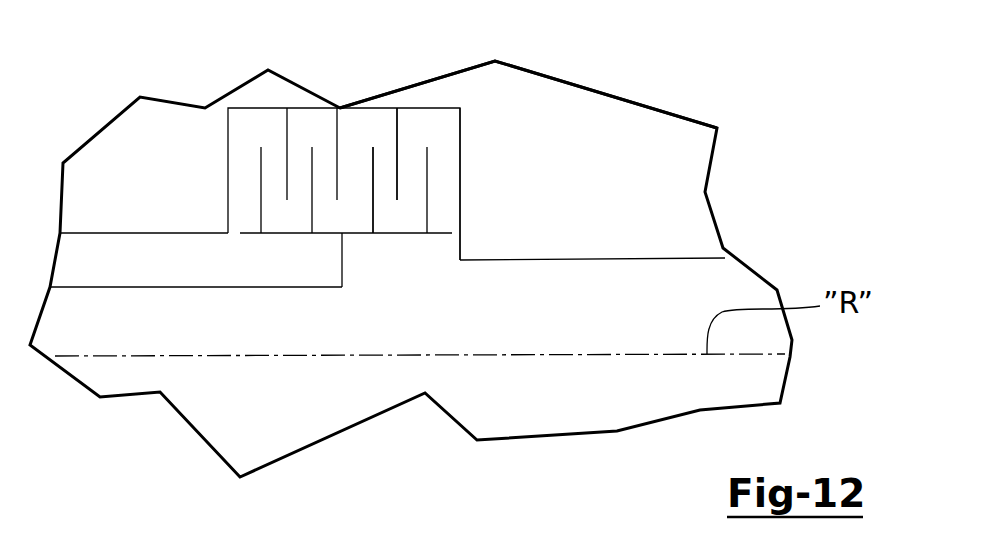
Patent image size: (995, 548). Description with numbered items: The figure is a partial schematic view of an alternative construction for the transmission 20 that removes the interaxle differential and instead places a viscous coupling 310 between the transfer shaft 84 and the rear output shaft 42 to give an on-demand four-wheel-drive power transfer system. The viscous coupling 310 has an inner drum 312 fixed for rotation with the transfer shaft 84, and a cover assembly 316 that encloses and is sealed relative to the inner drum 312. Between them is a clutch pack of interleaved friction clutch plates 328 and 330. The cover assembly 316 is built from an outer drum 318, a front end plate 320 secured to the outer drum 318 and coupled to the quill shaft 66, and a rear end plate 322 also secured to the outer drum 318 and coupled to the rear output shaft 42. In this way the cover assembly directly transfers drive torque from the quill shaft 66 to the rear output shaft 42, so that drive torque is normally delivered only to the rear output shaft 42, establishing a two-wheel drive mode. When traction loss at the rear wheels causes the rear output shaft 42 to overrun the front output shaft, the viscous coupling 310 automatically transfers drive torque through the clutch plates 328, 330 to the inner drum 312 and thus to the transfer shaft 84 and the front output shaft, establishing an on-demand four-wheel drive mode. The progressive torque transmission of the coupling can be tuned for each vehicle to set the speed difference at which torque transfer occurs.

The transmission 20 is at (752, 109).
The viscous coupling 310 is at (527, 93).
The cover assembly 316 is at (256, 106).
The outer drum 318 is at (310, 108).
The front end plate 320 is at (228, 158).
The rear end plate 322 is at (462, 177).
The friction clutch plates 328 is at (377, 208).
The friction clutch plates 330 is at (287, 130).
The inner drum 312 is at (320, 233).
The rear output shaft 42 is at (510, 260).
The quill shaft 66 is at (108, 233).
The transfer shaft 84 is at (202, 287).